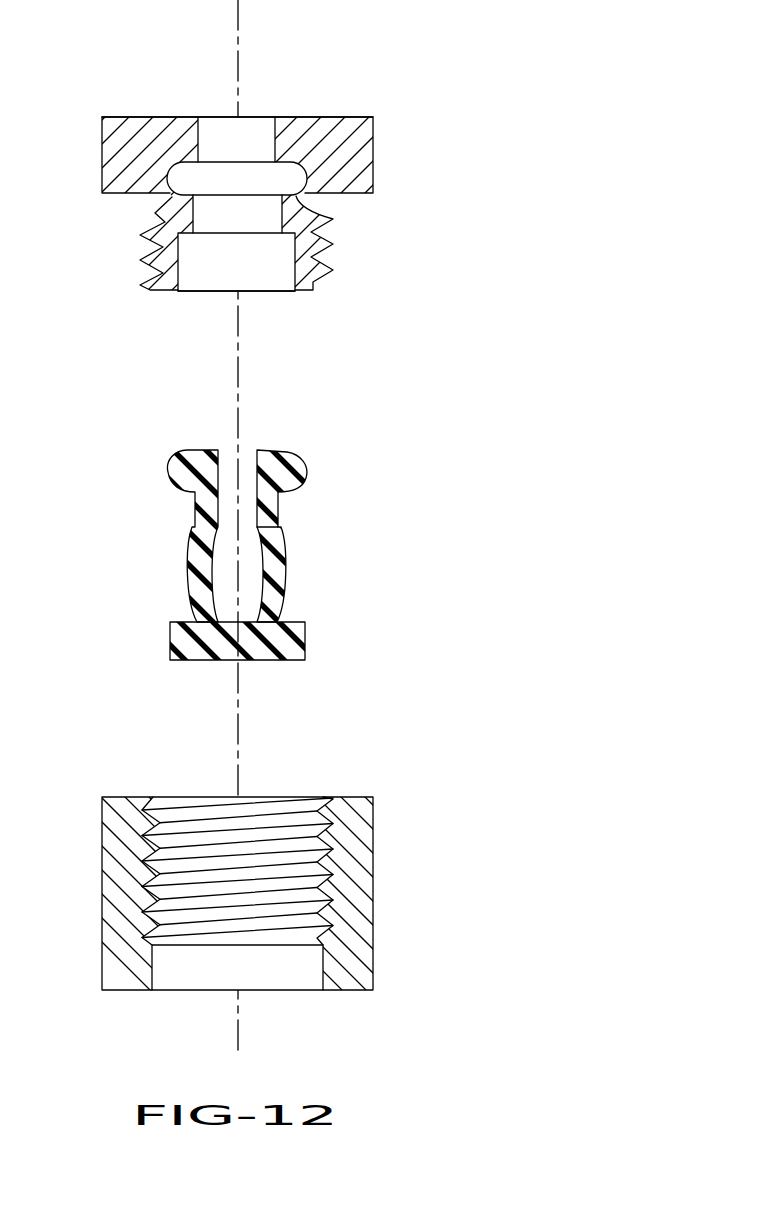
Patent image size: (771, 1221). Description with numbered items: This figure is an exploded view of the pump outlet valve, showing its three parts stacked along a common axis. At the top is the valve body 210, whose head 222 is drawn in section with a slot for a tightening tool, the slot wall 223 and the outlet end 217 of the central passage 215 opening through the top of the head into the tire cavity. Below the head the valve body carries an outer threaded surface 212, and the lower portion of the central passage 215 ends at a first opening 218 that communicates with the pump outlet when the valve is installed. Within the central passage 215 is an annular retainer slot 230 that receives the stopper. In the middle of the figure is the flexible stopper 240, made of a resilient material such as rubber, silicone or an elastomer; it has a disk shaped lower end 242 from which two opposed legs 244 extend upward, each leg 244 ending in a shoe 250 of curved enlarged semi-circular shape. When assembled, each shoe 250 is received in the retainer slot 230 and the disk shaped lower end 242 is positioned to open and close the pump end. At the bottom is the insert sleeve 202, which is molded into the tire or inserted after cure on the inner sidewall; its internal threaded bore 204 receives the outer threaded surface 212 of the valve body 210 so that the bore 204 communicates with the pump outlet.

The valve body 210 is at (118, 114).
The head 222 is at (335, 117).
The slot wall 223 is at (215, 128).
The outlet end 217 is at (258, 128).
The retainer slot 230 is at (187, 177).
The outer threaded surface 212 is at (332, 236).
The first opening 218 is at (182, 271).
The central passage 215 is at (262, 267).
The flexible stopper 240 is at (170, 456).
The shoe 250 is at (275, 468).
The leg 244 is at (287, 564).
The disk shaped lower end 242 is at (263, 643).
The insert sleeve 202 is at (377, 838).
The internal threaded bore 204 is at (148, 845).